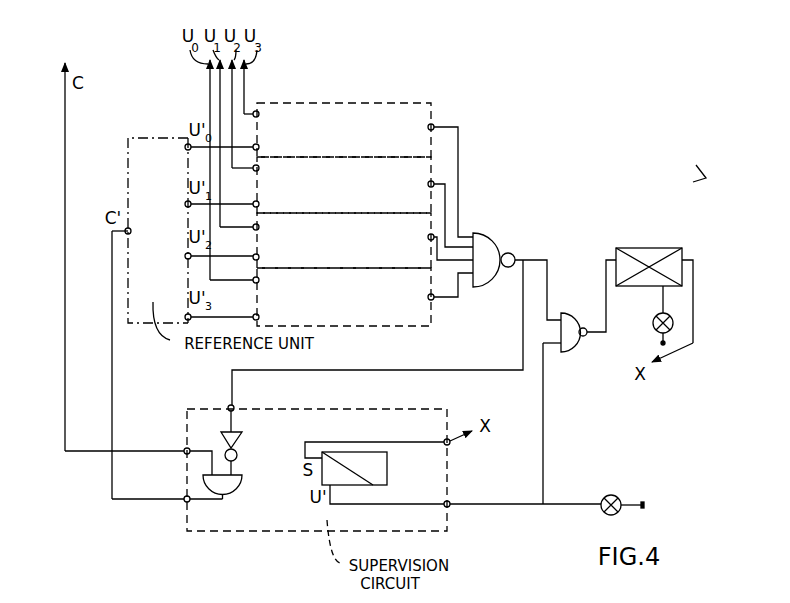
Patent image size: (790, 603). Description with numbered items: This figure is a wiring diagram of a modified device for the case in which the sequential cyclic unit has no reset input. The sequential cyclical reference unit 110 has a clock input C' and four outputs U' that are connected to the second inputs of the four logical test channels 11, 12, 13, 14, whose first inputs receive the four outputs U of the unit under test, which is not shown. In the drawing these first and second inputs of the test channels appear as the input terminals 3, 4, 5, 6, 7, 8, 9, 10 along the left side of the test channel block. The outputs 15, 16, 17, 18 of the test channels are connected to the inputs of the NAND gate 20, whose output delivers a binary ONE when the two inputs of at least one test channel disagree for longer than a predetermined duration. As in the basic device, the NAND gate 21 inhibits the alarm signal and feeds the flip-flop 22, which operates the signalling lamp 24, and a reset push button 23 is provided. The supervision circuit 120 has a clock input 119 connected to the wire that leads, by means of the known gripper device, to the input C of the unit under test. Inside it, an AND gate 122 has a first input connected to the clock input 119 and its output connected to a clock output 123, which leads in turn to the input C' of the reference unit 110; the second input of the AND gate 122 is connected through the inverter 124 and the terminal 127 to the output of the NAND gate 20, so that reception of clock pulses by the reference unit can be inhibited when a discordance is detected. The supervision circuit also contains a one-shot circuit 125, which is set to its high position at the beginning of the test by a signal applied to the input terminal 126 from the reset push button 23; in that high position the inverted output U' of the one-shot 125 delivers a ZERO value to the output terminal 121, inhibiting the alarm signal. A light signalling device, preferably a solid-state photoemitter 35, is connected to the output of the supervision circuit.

The input terminal 3 is at (260, 114).
The input terminal 4 is at (233, 147).
The input terminal 5 is at (254, 168).
The input terminal 6 is at (233, 204).
The input terminal 7 is at (248, 227).
The input terminal 8 is at (233, 257).
The input terminal 9 is at (243, 280).
The input terminal 10 is at (238, 317).
The logical test channel 11 is at (422, 113).
The logical test channel 12 is at (420, 172).
The logical test channel 13 is at (422, 225).
The logical test channel 14 is at (417, 318).
The test channel output 15 is at (435, 179).
The test channel output 16 is at (435, 212).
The test channel output 17 is at (435, 245).
The test channel output 18 is at (433, 290).
The NAND gate 20 is at (490, 243).
The NAND gate 21 is at (579, 314).
The flip-flop 22 is at (654, 284).
The reset push button 23 is at (670, 192).
The signalling lamp 24 is at (652, 315).
The solid-state photoemitter 35 is at (623, 497).
The sequential cyclical reference unit 110 is at (151, 218).
The clock input 119 is at (138, 452).
The supervision circuit 120 is at (525, 520).
The output terminal 121 is at (450, 501).
The AND gate 122 is at (228, 492).
The clock output 123 is at (184, 502).
The inverter 124 is at (246, 453).
The one-shot circuit 125 is at (374, 473).
The input terminal 126 is at (464, 449).
The terminal 127 is at (248, 408).